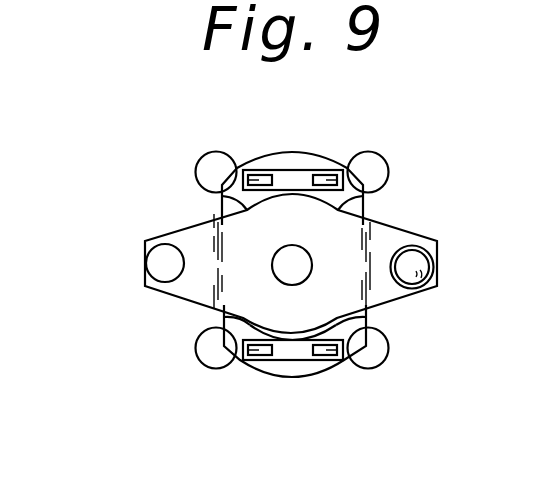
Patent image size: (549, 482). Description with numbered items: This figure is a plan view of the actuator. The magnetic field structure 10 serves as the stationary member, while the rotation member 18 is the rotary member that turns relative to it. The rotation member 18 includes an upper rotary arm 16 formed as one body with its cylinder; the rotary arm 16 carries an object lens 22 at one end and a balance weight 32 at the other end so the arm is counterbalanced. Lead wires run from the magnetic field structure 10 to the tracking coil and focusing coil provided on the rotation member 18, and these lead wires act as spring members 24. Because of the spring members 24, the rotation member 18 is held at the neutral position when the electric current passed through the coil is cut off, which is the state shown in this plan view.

The magnetic field structure 10 is at (291, 383).
The upper rotary arm 16 is at (205, 242).
The rotation member 18 is at (262, 249).
The object lens 22 is at (419, 257).
The spring members 24 is at (203, 157).
The balance weight 32 is at (157, 267).